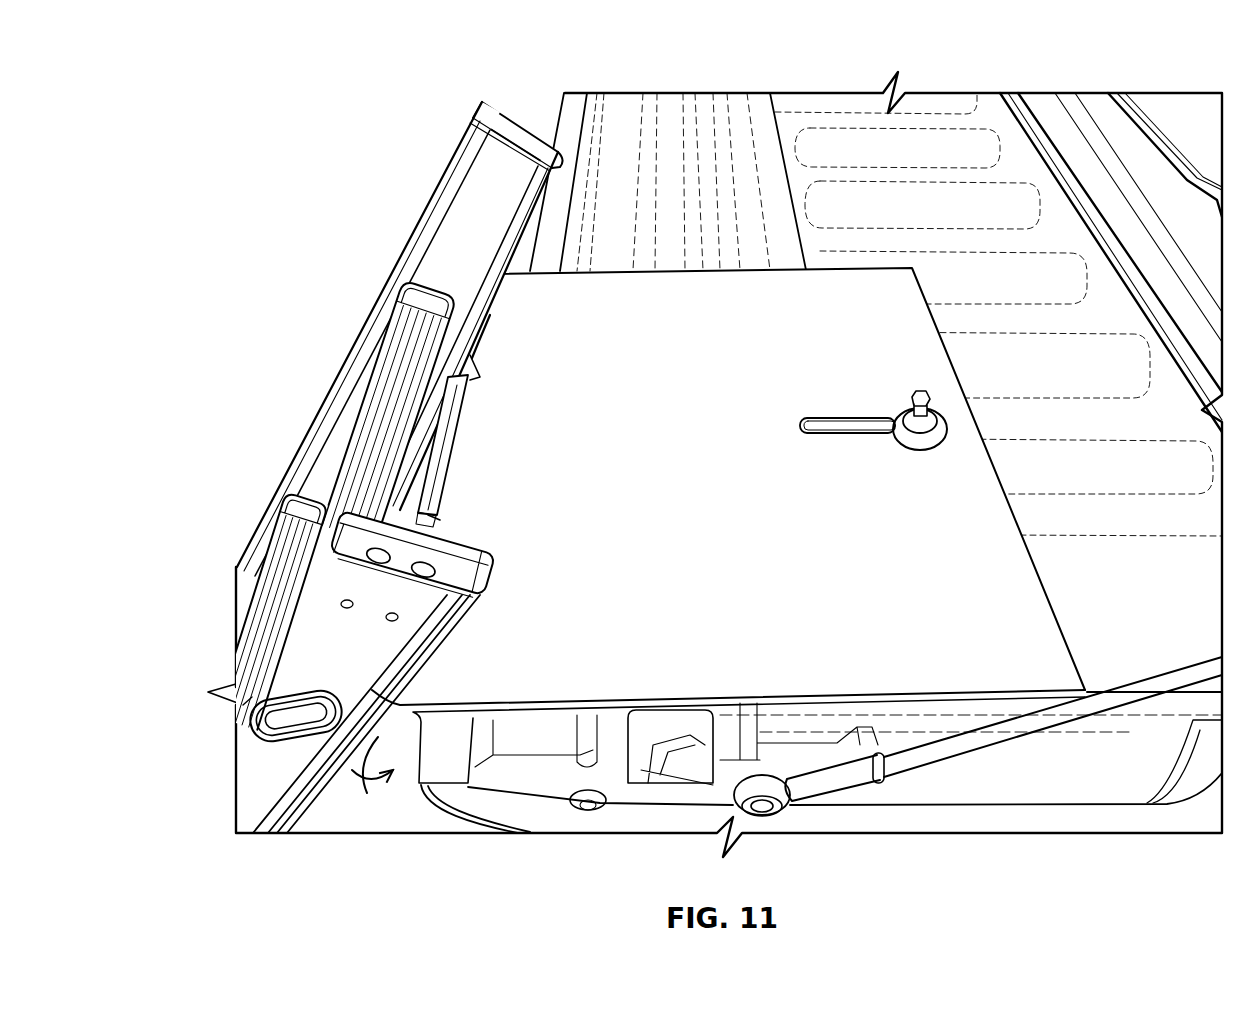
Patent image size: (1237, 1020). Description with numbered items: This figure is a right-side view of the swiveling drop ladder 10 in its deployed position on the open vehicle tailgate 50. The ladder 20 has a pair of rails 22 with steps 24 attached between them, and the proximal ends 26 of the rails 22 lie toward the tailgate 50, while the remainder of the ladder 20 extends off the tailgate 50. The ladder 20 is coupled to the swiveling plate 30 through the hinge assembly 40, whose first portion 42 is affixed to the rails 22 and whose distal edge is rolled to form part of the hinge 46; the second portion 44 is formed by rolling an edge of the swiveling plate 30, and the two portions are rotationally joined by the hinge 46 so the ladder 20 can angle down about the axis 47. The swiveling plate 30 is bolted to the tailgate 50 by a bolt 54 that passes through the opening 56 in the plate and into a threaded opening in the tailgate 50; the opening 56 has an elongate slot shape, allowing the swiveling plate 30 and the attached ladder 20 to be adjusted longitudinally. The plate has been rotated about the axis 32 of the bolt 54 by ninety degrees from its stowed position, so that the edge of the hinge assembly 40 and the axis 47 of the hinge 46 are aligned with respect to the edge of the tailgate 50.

The swiveling drop ladder 10 is at (336, 86).
The ladder 20 is at (377, 429).
The rails 22 is at (477, 102).
The steps 24 is at (385, 412).
The proximal ends 26 is at (403, 203).
The swiveling plate 30 is at (615, 545).
The axis 32 is at (867, 376).
The hinge assembly 40 is at (505, 503).
The first portion 42 is at (433, 452).
The second portion 44 is at (433, 527).
The hinge 46 is at (483, 335).
The axis 47 is at (368, 780).
The vehicle tailgate 50 is at (830, 147).
The bolt 54 is at (913, 400).
The opening 56 is at (817, 418).